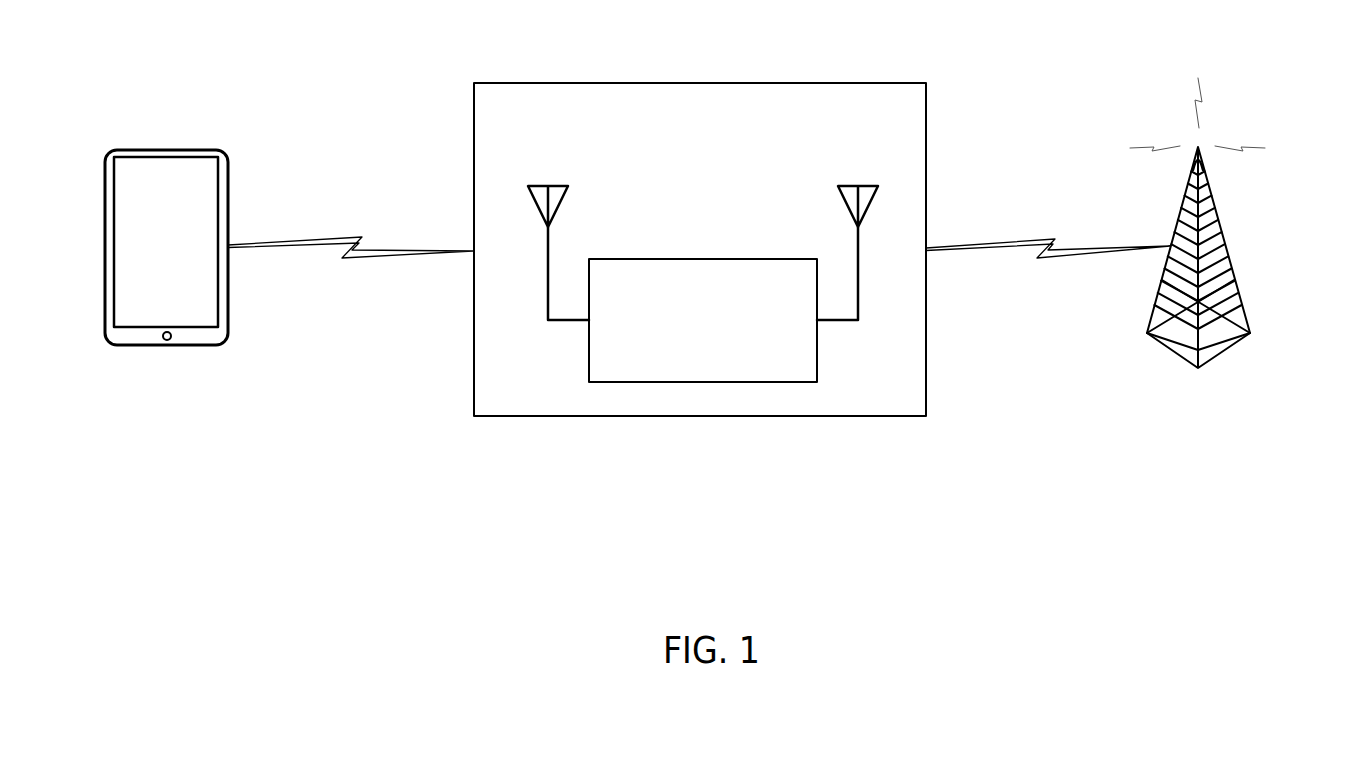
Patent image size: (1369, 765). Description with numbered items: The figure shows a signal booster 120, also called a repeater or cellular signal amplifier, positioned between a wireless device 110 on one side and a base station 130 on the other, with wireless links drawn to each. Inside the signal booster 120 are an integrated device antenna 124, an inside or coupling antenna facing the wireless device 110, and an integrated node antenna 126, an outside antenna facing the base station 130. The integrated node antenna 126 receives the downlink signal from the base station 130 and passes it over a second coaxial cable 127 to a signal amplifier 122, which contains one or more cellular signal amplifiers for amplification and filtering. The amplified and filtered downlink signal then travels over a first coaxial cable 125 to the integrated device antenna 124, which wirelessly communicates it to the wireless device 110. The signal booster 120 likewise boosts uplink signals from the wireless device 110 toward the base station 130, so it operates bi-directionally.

The wireless device 110 is at (162, 150).
The signal booster 120 is at (815, 124).
The signal amplifier 122 is at (723, 350).
The integrated device antenna 124 is at (548, 193).
The first coaxial cable 125 is at (540, 273).
The integrated node antenna 126 is at (859, 193).
The second coaxial cable 127 is at (861, 273).
The base station 130 is at (1215, 208).